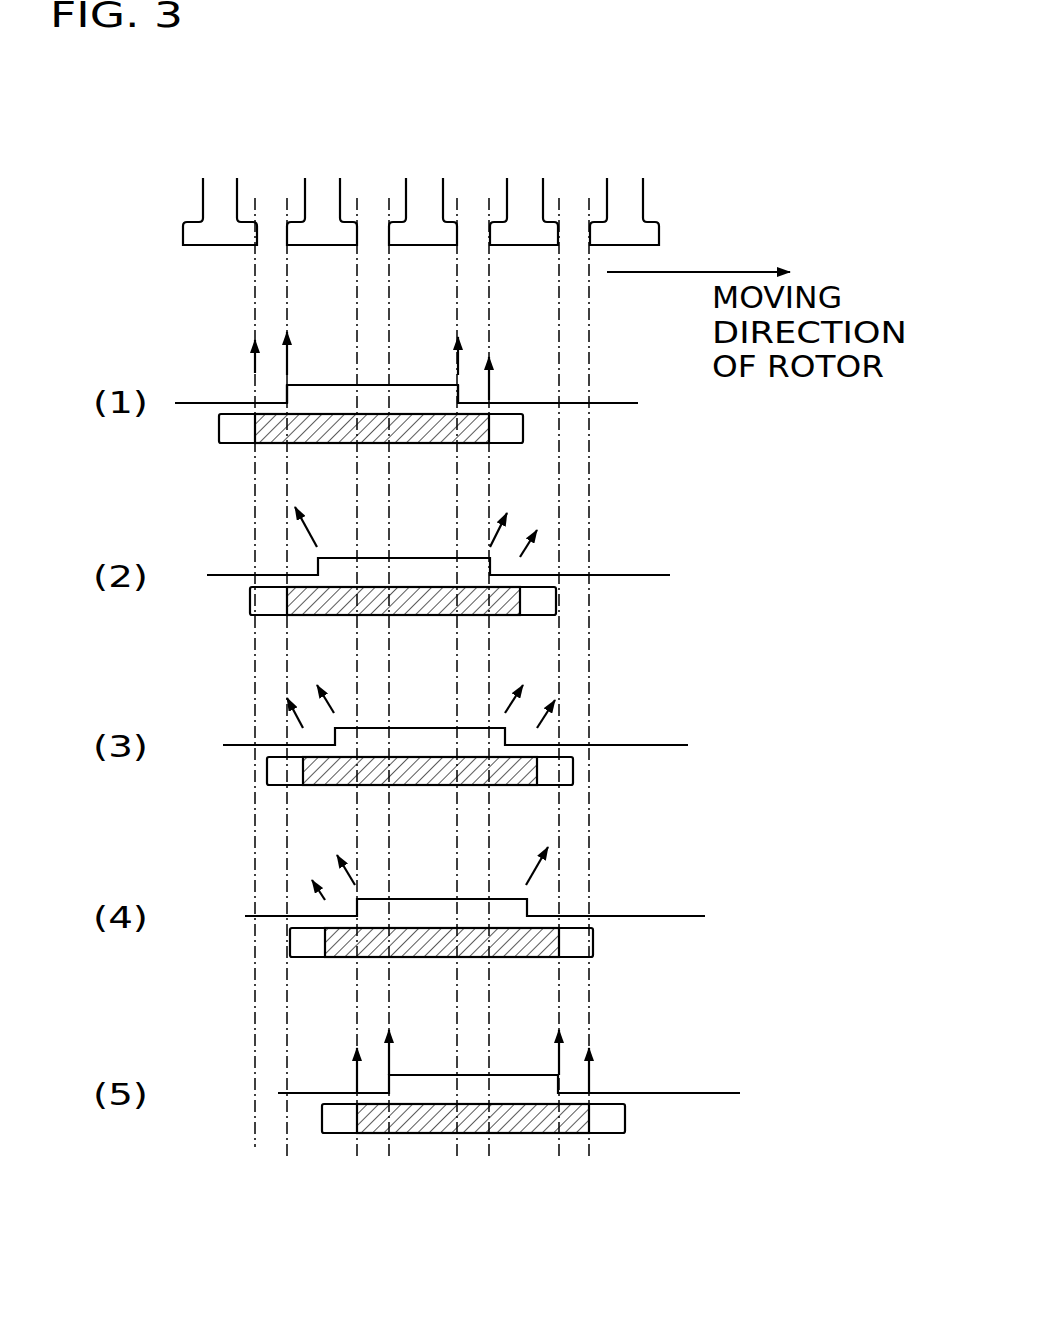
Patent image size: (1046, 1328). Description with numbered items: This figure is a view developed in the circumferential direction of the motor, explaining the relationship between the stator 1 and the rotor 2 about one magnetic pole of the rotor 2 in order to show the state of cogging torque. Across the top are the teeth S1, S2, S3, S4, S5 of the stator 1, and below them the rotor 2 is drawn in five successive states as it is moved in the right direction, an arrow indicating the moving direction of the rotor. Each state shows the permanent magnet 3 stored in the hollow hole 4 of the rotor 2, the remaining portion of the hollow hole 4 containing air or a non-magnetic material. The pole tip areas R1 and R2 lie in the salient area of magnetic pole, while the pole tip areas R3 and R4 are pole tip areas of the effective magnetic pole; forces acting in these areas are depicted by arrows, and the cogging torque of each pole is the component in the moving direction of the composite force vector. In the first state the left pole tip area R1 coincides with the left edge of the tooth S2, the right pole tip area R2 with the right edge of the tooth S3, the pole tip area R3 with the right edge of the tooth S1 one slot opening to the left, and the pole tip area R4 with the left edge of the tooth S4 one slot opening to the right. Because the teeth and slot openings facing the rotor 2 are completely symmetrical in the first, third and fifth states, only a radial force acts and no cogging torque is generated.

The stator 1 is at (644, 190).
The rotor 2 is at (604, 428).
The permanent magnet 3 is at (255, 445).
The hollow hole 4 is at (225, 425).
The tooth S1 is at (220, 211).
The tooth S2 is at (322, 211).
The tooth S3 is at (423, 211).
The tooth S4 is at (524, 211).
The tooth S5 is at (624, 211).
The pole tip area R1 is at (280, 380).
The pole tip area R2 is at (463, 380).
The pole tip area R3 is at (252, 400).
The pole tip area R4 is at (493, 400).